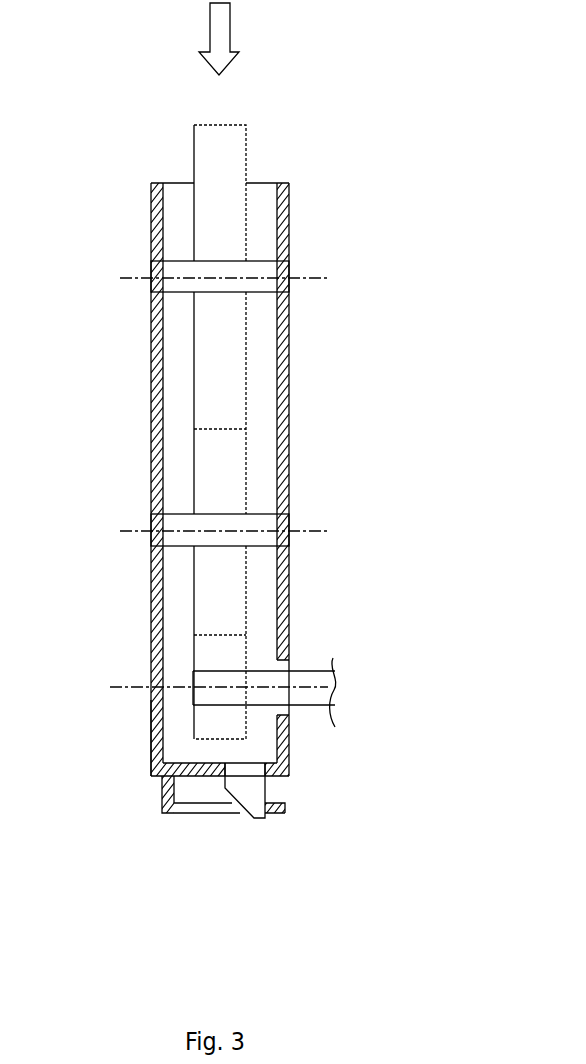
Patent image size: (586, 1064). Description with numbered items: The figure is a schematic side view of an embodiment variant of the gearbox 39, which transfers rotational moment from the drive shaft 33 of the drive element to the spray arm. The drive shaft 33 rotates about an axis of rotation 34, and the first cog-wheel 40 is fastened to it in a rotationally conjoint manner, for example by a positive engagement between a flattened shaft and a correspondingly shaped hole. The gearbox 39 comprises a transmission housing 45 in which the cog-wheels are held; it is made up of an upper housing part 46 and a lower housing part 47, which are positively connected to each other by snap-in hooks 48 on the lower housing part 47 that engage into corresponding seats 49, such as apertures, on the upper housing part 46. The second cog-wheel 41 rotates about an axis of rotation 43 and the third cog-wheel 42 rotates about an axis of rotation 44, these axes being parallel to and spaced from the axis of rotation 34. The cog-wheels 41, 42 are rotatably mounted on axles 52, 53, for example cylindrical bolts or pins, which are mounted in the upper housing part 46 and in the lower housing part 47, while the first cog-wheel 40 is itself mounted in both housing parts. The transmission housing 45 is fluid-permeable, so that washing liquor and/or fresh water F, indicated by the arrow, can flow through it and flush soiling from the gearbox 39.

The fresh water F is at (230, 30).
The gearbox 39 is at (152, 118).
The drive shaft 33 is at (305, 671).
The axis of rotation 34 is at (110, 687).
The first cog-wheel 40 is at (218, 648).
The second cog-wheel 41 is at (217, 562).
The third cog-wheel 42 is at (215, 340).
The axis of rotation 43 is at (327, 531).
The axis of rotation 44 is at (327, 278).
The transmission housing 45 is at (145, 585).
The upper housing part 46 is at (151, 735).
The lower housing part 47 is at (289, 748).
The snap-in hooks 48 is at (232, 797).
The seats 49 is at (193, 813).
The axle 52 is at (272, 526).
The axle 53 is at (272, 271).